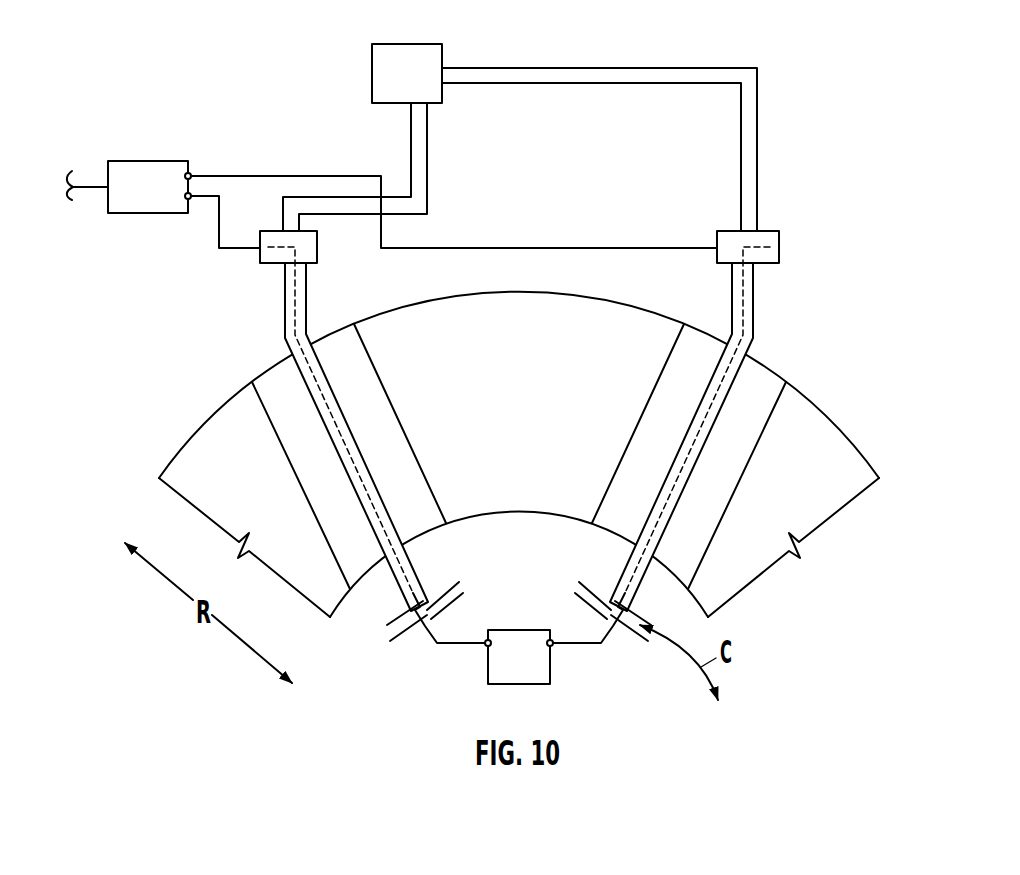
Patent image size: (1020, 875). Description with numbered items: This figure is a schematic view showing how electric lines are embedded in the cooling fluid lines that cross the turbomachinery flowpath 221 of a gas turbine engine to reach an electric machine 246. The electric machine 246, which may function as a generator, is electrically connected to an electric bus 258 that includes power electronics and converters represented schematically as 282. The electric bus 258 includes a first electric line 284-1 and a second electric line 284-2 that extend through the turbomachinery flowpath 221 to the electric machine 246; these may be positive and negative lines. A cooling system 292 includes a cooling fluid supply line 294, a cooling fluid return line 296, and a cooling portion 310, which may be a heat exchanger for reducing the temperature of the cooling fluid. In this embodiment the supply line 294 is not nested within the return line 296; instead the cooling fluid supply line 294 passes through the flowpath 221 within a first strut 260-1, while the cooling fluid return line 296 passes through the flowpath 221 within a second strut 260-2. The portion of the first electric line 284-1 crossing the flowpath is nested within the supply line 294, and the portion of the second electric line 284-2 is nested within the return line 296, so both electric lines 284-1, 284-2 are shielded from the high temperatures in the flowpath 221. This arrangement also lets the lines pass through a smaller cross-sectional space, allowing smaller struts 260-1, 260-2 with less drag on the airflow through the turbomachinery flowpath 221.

The turbomachinery flowpath 221 is at (534, 425).
The electric machine 246 is at (536, 669).
The electric bus 258 is at (273, 140).
The first strut 260-1 is at (389, 400).
The second strut 260-2 is at (776, 406).
The power electronics 282 is at (168, 202).
The first electric line 284-1 is at (219, 231).
The second electric line 284-2 is at (558, 247).
The cooling system 292 is at (630, 38).
The cooling fluid supply line 294 is at (427, 162).
The cooling fluid return line 296 is at (757, 170).
The cooling portion 310 is at (426, 89).